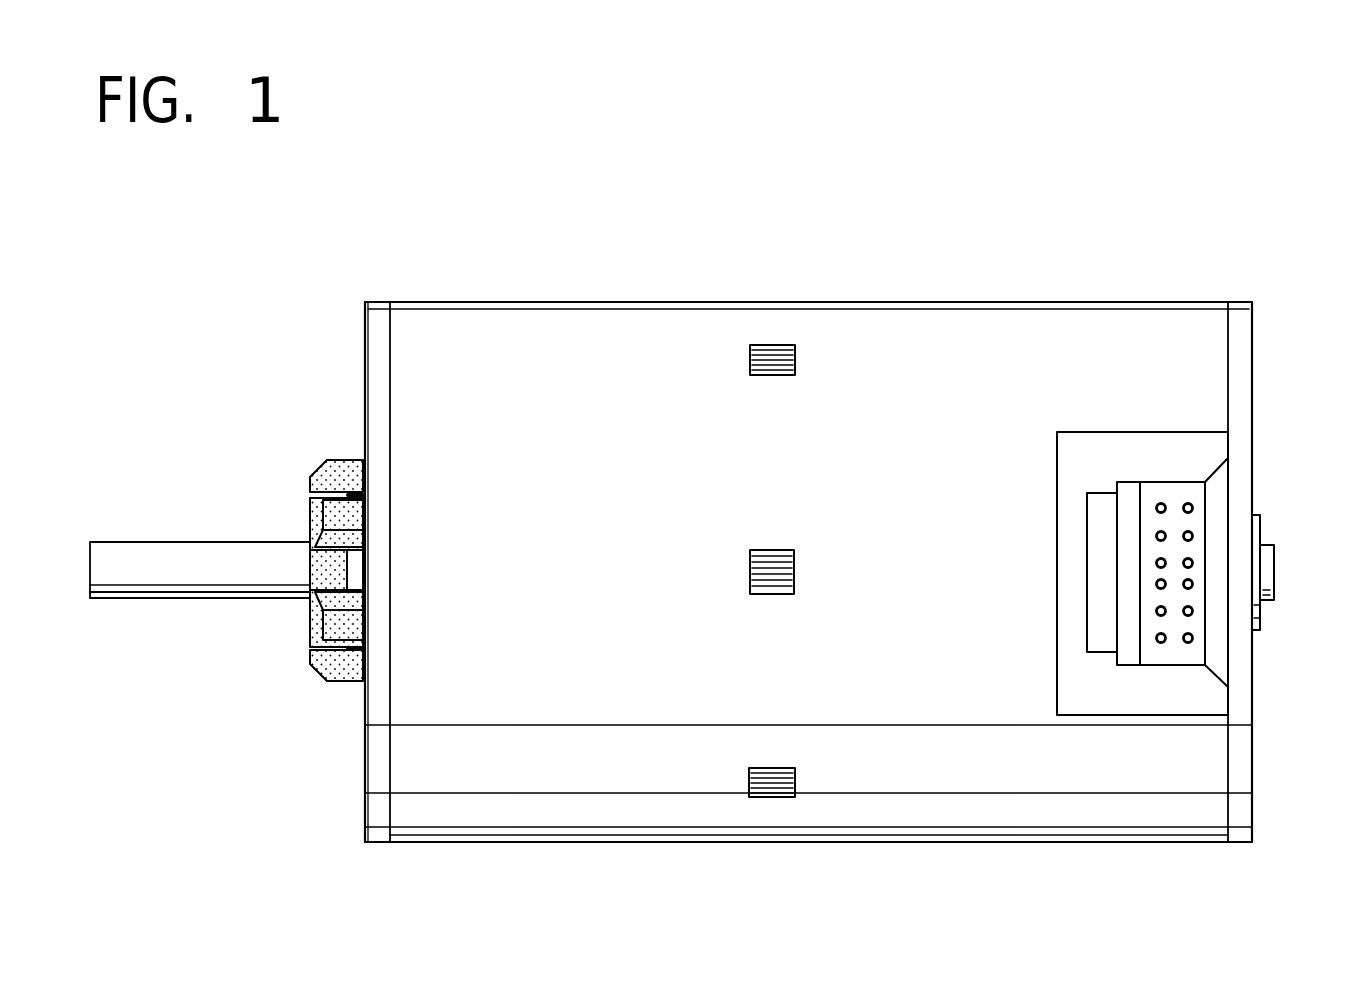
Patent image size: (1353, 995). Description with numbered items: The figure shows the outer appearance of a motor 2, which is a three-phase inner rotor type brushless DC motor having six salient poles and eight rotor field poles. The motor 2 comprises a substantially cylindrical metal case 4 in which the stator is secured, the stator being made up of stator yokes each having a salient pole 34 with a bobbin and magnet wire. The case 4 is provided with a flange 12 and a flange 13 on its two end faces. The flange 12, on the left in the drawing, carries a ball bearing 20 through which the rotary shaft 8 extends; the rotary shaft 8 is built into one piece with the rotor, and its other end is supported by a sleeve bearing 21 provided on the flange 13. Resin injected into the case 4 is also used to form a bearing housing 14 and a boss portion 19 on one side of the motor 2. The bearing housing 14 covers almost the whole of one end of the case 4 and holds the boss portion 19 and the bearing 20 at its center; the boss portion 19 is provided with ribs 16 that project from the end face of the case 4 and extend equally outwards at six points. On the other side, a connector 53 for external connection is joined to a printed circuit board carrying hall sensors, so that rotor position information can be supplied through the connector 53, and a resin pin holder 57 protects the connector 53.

The motor 2 is at (893, 290).
The case 4 is at (583, 312).
The rotary shaft 8 is at (157, 553).
The flange 12 is at (373, 762).
The flange 13 is at (1240, 767).
The bearing housing 14 is at (336, 456).
The ribs 16 is at (328, 623).
The boss portion 19 is at (310, 497).
The ball bearing 20 is at (355, 573).
The sleeve bearing 21 is at (1261, 526).
The salient pole 34 is at (773, 785).
The connector 53 is at (1193, 585).
The pin holder 57 is at (1152, 710).